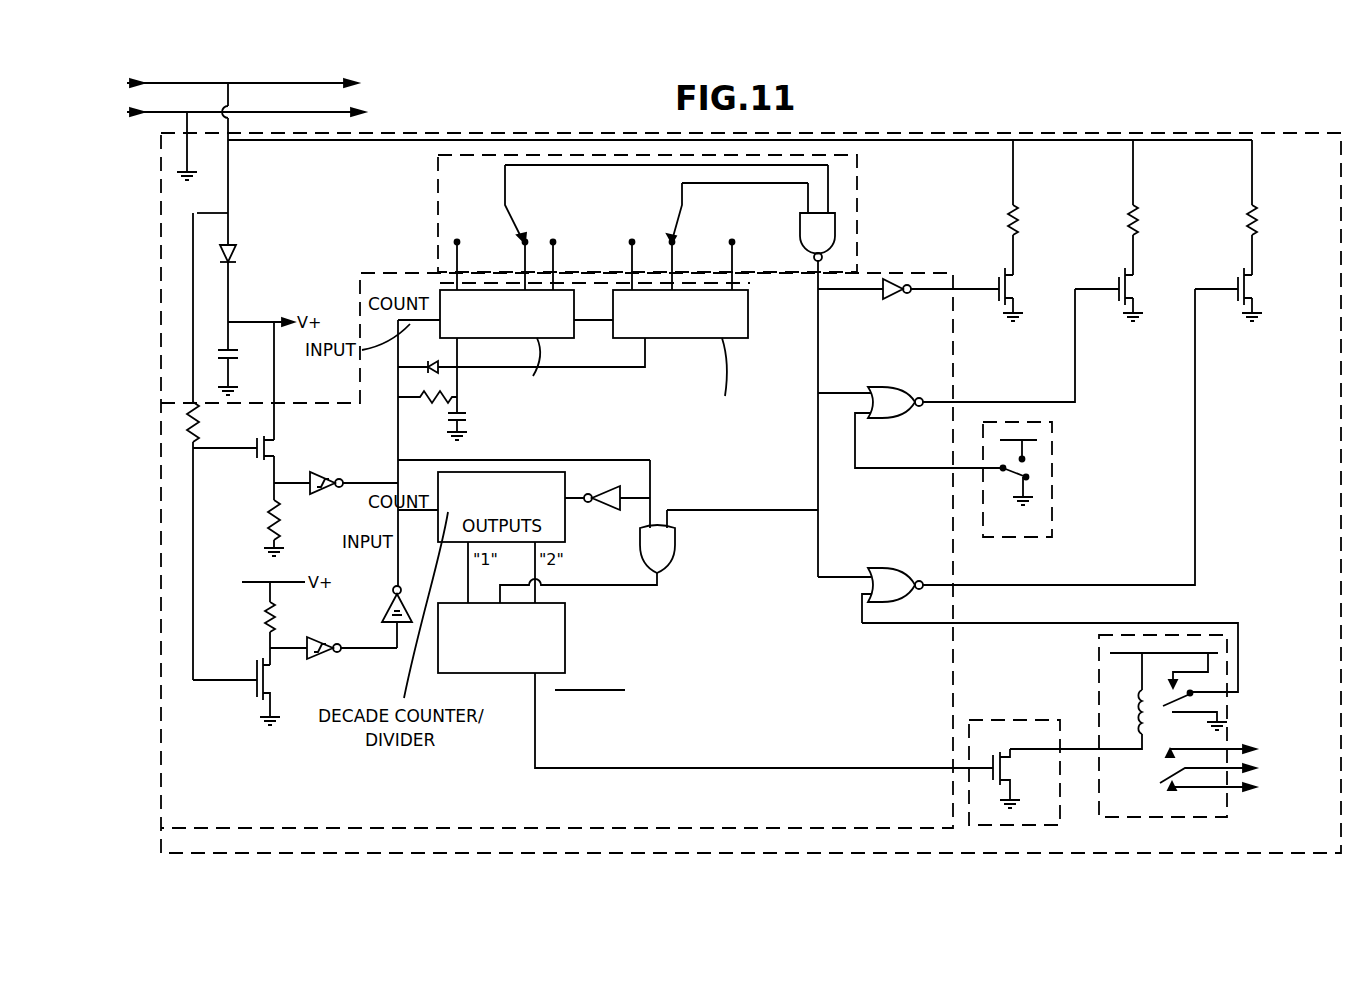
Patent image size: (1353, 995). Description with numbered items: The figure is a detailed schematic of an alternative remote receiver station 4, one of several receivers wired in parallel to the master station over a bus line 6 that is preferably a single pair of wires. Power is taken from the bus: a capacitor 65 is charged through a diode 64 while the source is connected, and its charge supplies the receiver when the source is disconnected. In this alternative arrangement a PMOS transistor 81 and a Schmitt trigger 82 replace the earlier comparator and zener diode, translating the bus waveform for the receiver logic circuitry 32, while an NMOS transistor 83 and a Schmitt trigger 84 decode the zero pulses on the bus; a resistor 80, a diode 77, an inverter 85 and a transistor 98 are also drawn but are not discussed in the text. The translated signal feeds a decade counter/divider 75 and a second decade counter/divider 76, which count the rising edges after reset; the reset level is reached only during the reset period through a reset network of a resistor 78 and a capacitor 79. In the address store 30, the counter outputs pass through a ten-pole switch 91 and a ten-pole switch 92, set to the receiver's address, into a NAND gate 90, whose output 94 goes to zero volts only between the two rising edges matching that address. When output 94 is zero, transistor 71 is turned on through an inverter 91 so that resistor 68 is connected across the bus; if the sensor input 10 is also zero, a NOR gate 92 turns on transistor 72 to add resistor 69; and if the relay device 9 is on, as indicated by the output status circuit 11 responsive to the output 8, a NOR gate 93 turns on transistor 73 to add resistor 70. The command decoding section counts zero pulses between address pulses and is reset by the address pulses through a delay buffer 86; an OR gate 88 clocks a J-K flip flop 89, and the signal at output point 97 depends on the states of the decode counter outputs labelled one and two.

The receiver station 4 is at (444, 131).
The bus line 6 is at (322, 83).
The output 8 is at (1061, 800).
The electrical device 9 is at (1228, 812).
The input 10 is at (1053, 432).
The output status circuit 11 is at (1197, 625).
The address store 30 is at (858, 172).
The receiver logic circuitry 32 is at (292, 827).
The diode 64 is at (229, 245).
The capacitor 65 is at (238, 355).
The resistor 68 is at (1019, 212).
The resistor 69 is at (1139, 212).
The resistor 70 is at (1258, 212).
The transistor 71 is at (1012, 288).
The transistor 72 is at (1133, 288).
The transistor 73 is at (1252, 288).
The decade counter/divider 75 is at (563, 340).
The second decade counter/divider 76 is at (748, 338).
The diode 77 is at (426, 361).
The resistor 78 is at (434, 404).
The capacitor 79 is at (466, 430).
The resistor 80 is at (179, 422).
The PMOS transistor 81 is at (277, 418).
The Schmitt trigger 82 is at (319, 476).
The NMOS transistor 83 is at (270, 688).
The Schmitt trigger 84 is at (318, 640).
The inverter 85 is at (410, 604).
The delay buffer 86 is at (603, 492).
The OR gate 88 is at (673, 554).
The J-K flip flop 89 is at (566, 632).
The NAND gate 90 is at (838, 244).
The 10-pole switch 91 is at (889, 300).
The 10-pole switch 92 is at (890, 390).
The NOR gate 93 is at (890, 573).
The output of NAND gate 94 is at (827, 292).
The output point 97 is at (536, 745).
The transistor 98 is at (1012, 752).